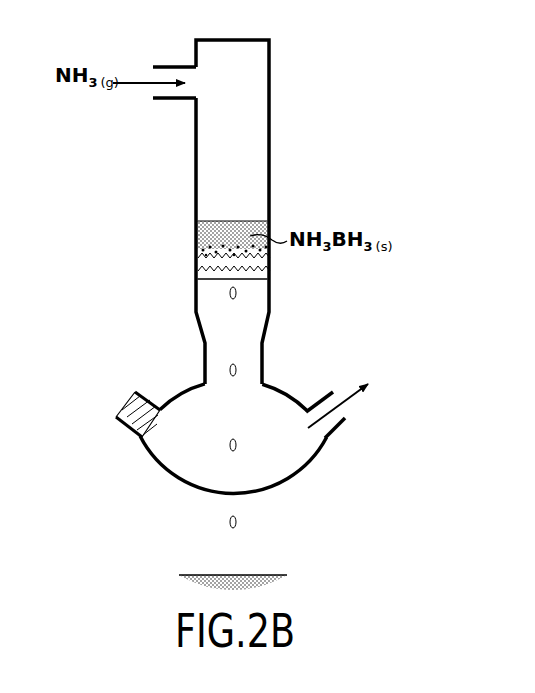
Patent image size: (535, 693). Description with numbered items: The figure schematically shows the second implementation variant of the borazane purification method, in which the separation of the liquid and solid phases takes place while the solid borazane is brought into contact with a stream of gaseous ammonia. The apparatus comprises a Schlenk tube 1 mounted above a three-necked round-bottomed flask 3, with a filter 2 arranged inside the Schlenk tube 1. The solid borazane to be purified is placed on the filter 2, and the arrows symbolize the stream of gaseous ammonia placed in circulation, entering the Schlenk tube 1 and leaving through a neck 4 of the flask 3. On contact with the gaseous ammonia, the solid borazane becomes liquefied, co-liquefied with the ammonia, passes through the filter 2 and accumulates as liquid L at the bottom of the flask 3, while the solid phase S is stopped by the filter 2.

The Schlenk tube 1 is at (270, 115).
The filter 2 is at (197, 267).
The three-necked round-bottomed flask 3 is at (129, 500).
The neck of the three-necked round-bottomed flask 4 is at (348, 419).
The solid phase S is at (222, 232).
The liquid L is at (272, 580).